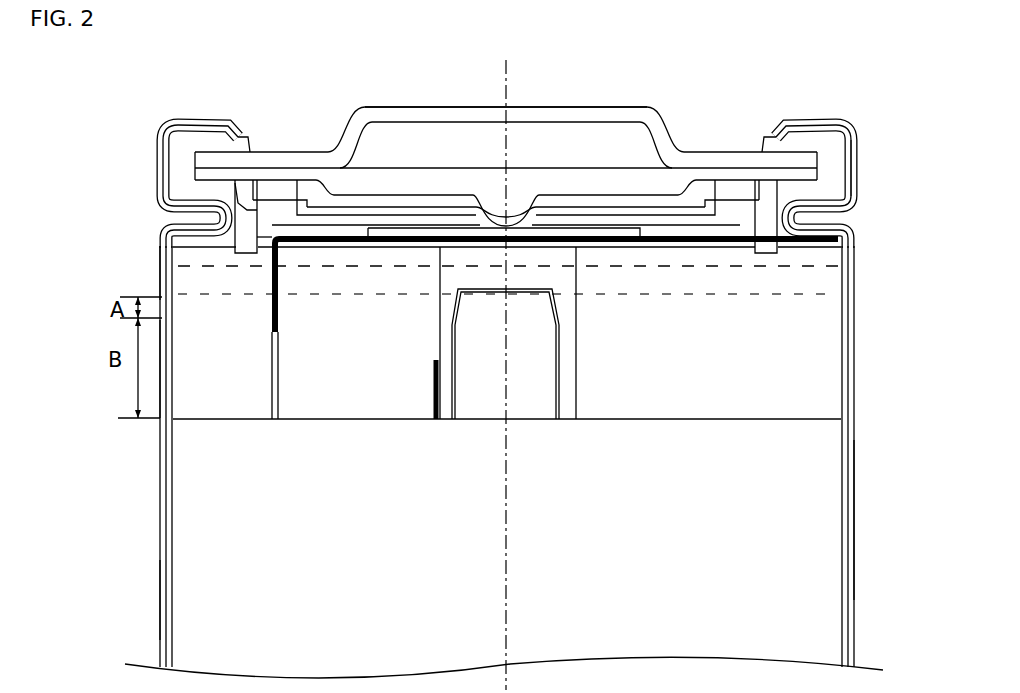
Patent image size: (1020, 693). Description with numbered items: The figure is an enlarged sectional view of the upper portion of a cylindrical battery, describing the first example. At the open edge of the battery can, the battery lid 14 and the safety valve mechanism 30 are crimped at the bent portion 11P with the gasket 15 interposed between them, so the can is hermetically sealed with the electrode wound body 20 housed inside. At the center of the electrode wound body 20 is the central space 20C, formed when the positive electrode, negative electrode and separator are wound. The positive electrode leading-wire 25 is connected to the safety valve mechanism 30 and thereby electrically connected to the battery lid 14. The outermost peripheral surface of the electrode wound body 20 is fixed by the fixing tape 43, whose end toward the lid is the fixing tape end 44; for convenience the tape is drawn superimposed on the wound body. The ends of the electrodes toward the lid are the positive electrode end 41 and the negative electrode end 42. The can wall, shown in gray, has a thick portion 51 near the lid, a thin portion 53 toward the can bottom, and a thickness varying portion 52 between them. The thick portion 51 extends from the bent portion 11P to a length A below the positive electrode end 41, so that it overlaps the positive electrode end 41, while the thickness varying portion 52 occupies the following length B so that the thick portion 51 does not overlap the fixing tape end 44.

The electrode wound body 20 is at (851, 391).
The central space 20C is at (535, 289).
The bent portion 11P is at (812, 121).
The battery lid 14 is at (440, 106).
The gasket 15 is at (828, 167).
The positive electrode leading-wire 25 is at (305, 236).
The safety valve mechanism 30 is at (488, 181).
The positive electrode end 41 is at (260, 295).
The negative electrode end 42 is at (223, 265).
The fixing tape 43 is at (820, 513).
The fixing tape end 44 is at (840, 419).
The thick portion 51 is at (159, 244).
The thickness varying portion 52 is at (159, 374).
The thin portion 53 is at (159, 602).